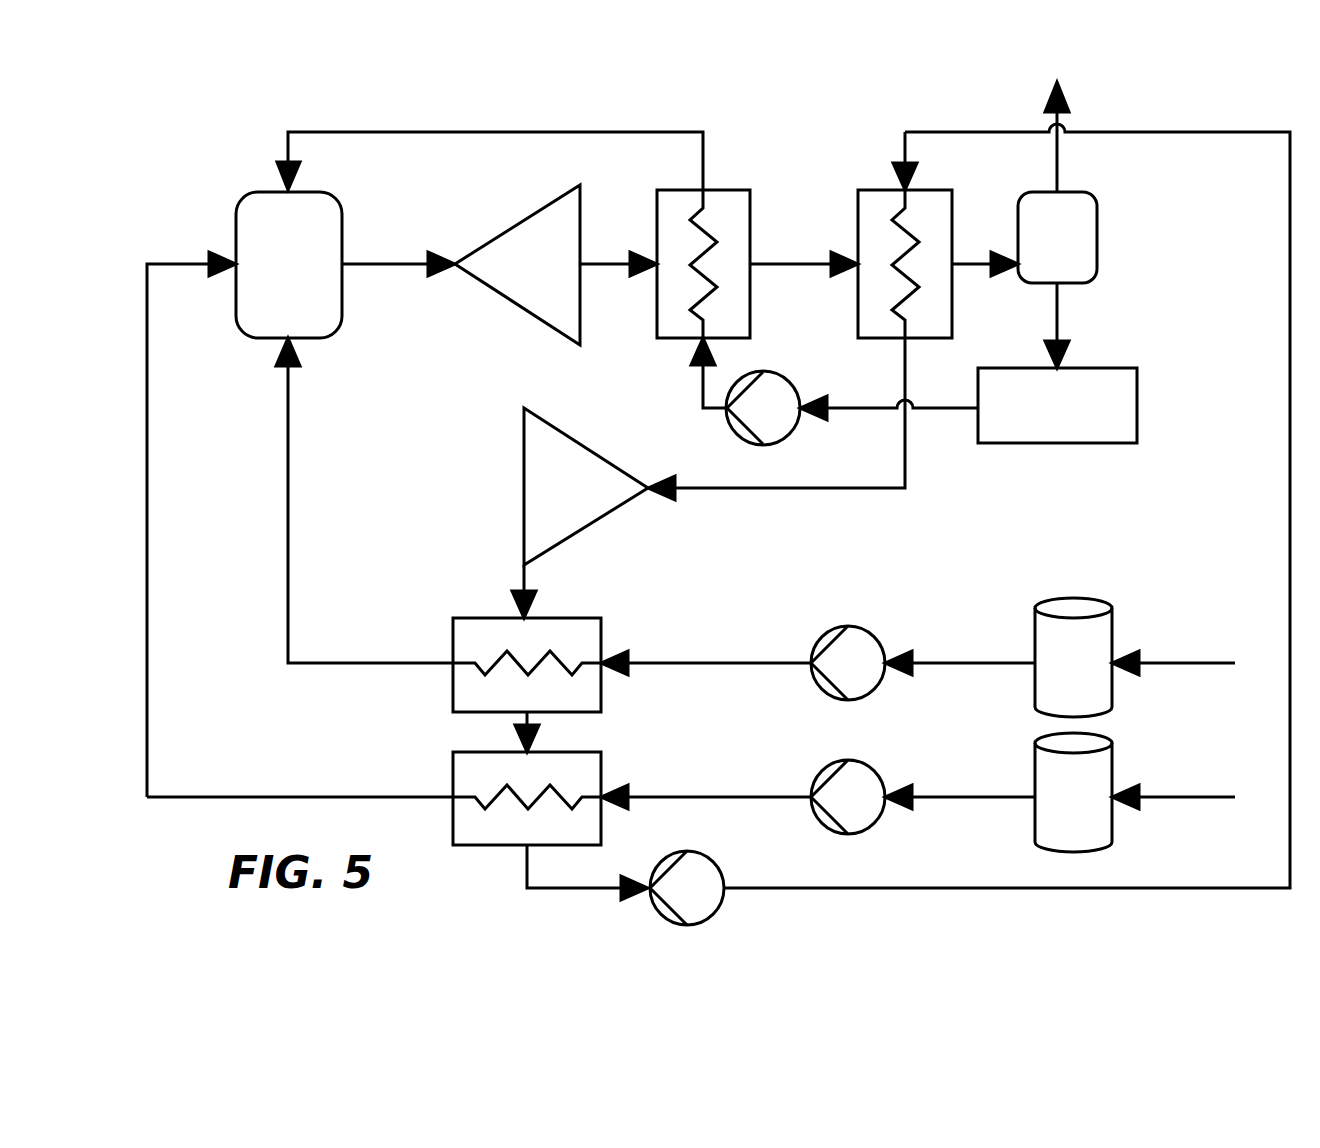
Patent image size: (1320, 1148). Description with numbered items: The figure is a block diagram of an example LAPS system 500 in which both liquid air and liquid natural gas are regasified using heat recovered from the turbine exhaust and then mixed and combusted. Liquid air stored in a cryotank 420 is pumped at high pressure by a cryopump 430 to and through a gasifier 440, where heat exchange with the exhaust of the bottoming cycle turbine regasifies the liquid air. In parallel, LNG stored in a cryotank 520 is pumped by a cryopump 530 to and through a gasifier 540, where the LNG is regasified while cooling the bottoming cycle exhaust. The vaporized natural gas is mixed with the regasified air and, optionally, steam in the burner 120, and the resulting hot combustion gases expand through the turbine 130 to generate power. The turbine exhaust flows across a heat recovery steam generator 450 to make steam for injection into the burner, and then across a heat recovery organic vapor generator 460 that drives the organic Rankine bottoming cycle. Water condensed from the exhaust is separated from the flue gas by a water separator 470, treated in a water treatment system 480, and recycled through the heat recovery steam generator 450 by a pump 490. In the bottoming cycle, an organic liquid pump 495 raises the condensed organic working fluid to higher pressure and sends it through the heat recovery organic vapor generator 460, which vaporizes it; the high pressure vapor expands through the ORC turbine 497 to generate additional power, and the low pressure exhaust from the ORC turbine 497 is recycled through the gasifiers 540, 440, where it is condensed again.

The LAPS system 500 is at (190, 74).
The burner 120 is at (237, 226).
The turbine 130 is at (522, 220).
The heat recovery steam generator 450 is at (690, 190).
The heat recovery organic vapor generator 460 is at (880, 190).
The water separator 470 is at (1045, 192).
The water treatment system 480 is at (1031, 368).
The pump 490 is at (770, 371).
The ORC turbine 497 is at (521, 458).
The gasifier 540 is at (505, 618).
The gasifier 440 is at (470, 752).
The organic liquid pump 495 is at (683, 852).
The cryopump 530 is at (855, 628).
The cryotank 520 is at (1035, 678).
The cryopump 430 is at (855, 762).
The cryotank 420 is at (1035, 814).